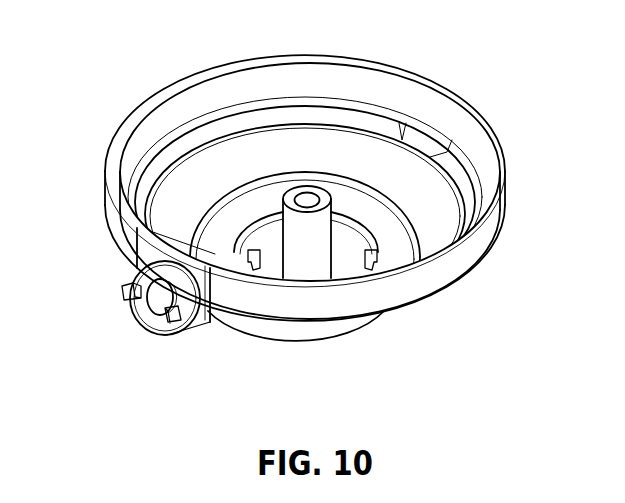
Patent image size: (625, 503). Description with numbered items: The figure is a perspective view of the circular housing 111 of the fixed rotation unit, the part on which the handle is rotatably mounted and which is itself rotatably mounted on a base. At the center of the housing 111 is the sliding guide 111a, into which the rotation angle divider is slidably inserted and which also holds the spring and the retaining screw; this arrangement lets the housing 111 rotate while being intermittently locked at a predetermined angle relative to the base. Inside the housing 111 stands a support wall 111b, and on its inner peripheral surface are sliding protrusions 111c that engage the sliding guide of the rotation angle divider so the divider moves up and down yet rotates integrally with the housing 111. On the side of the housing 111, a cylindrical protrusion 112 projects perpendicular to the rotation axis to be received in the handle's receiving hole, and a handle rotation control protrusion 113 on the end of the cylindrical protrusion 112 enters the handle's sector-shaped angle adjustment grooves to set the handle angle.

The housing 111 is at (496, 229).
The sliding guide 111a is at (313, 192).
The support wall 111b is at (257, 228).
The sliding protrusion 111c is at (266, 254).
The cylindrical protrusion 112 is at (146, 256).
The handle rotation control protrusion 113 is at (174, 327).